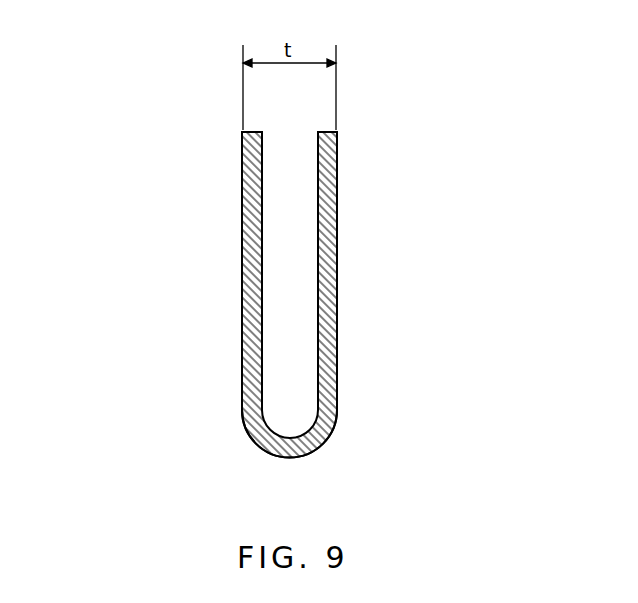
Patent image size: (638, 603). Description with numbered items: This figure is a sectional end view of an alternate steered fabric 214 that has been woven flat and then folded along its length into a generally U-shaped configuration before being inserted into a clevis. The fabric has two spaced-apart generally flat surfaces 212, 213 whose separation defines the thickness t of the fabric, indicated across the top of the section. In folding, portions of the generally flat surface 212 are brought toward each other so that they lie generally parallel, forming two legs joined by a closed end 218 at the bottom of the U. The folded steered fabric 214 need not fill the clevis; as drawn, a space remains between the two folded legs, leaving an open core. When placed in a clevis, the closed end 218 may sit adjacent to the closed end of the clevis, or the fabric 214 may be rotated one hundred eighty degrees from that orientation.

The generally flat surface 212 is at (315, 225).
The generally flat surface 213 is at (240, 305).
The alternate steered fabric 214 is at (337, 300).
The closed end 218 is at (292, 457).